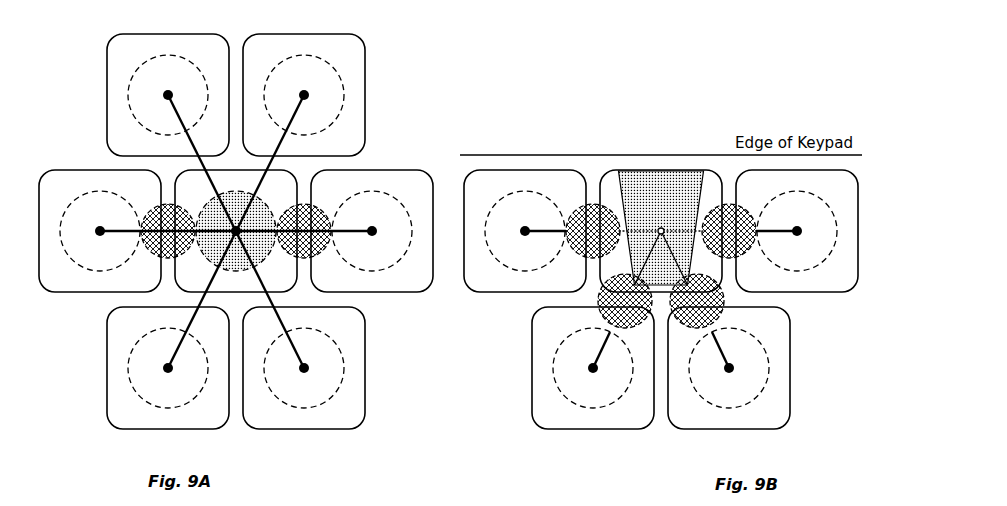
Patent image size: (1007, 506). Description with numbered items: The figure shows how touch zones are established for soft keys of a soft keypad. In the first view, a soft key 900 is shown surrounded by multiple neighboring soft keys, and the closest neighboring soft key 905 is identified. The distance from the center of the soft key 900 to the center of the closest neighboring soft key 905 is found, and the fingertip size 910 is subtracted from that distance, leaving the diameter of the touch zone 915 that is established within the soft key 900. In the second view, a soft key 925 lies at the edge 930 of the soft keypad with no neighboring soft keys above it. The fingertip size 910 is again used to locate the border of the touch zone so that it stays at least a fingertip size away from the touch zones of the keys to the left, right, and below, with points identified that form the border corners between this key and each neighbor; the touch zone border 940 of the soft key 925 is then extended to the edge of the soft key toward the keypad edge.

In FIG. 9A, the soft key 900 is at (176, 178).
In FIG. 9A, the closest neighboring soft key 905 is at (371, 172).
In FIG. 9A, the fingertip size 910 is at (316, 255).
In FIG. 9B, the fingertip size 910 is at (606, 240).
In FIG. 9A, the touch zone 915 is at (262, 206).
In FIG. 9B, the soft key 925 is at (648, 172).
In FIG. 9B, the edge 930 is at (597, 155).
In FIG. 9B, the touch zone border 940 is at (660, 200).